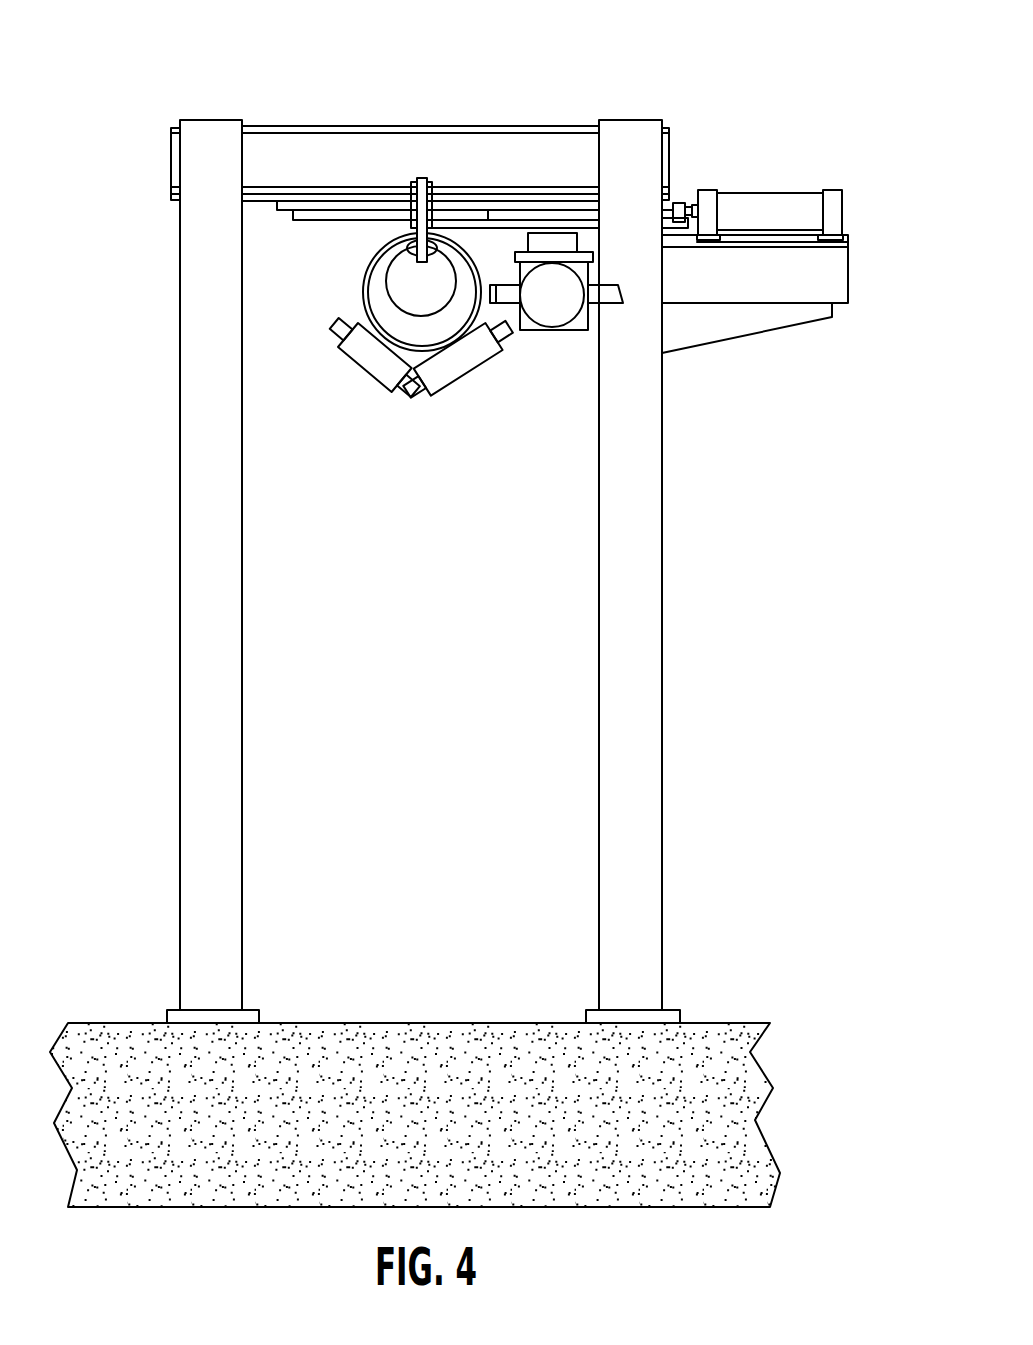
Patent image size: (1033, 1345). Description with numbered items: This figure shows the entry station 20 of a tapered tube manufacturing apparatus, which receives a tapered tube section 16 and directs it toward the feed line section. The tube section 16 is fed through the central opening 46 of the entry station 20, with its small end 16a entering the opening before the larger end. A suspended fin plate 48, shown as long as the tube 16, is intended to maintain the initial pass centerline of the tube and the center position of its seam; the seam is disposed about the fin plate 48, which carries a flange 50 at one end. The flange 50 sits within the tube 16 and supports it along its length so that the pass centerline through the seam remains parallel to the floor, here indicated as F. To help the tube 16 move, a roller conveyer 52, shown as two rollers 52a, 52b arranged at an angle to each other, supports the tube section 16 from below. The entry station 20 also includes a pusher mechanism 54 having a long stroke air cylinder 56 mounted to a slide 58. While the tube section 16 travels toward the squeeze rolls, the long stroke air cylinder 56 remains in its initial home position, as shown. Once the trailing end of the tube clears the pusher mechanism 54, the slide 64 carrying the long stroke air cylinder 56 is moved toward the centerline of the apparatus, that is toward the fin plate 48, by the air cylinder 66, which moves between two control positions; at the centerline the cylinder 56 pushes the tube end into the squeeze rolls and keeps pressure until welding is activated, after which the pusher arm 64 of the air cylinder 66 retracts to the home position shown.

The entry station 20 is at (391, 513).
The tapered tube section 16 is at (363, 263).
The small end 16a is at (457, 275).
The central opening 46 is at (555, 502).
The fin plate 48 is at (425, 232).
The flange 50 is at (412, 250).
The roller conveyer 52 is at (406, 408).
The roller 52a is at (388, 362).
The roller 52b is at (443, 375).
The pusher mechanism 54 is at (646, 336).
The long stroke air cylinder 56 is at (557, 300).
The slide 58 is at (613, 293).
The slide 64 is at (677, 201).
The air cylinder 66 is at (762, 207).
The floor F is at (327, 1065).